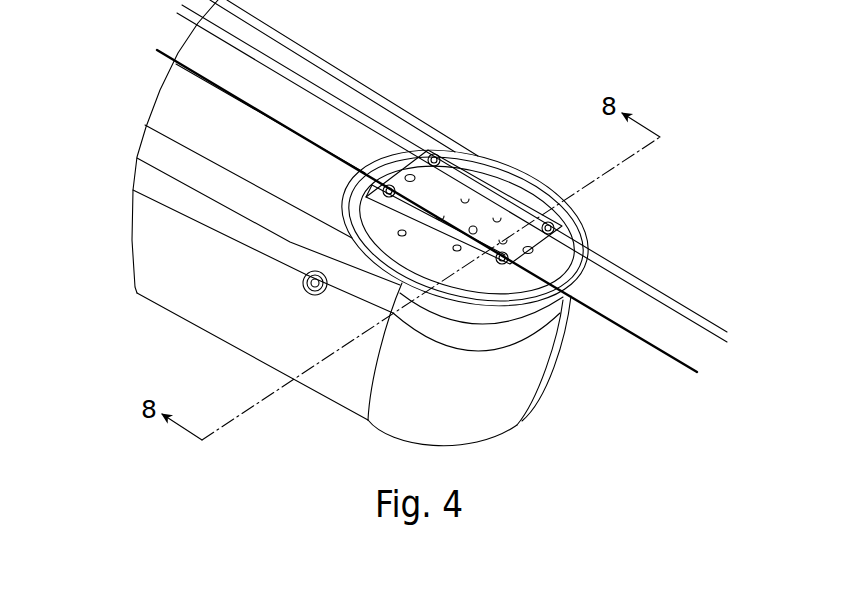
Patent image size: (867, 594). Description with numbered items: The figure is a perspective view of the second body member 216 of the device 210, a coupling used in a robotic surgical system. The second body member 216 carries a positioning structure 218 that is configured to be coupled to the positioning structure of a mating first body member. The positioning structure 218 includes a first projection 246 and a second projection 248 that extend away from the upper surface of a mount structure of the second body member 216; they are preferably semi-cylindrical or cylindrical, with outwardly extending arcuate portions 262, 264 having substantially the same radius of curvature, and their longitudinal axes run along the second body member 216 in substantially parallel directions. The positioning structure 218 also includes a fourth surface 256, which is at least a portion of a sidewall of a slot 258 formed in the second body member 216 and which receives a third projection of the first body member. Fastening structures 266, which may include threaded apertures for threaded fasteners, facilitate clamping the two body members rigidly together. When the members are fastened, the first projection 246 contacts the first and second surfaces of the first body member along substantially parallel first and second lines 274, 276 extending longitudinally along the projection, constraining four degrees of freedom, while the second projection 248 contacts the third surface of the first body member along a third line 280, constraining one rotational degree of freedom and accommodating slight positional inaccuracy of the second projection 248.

The device 210 is at (160, 325).
The second body member 216 is at (579, 227).
The positioning structure 218 is at (663, 179).
The first projection 246 is at (492, 188).
The second projection 248 is at (443, 205).
The fourth surface 256 is at (509, 238).
The slot 258 is at (527, 272).
The arcuate portion 262 is at (490, 264).
The arcuate portion 264 is at (516, 210).
The fastening structures 266 is at (410, 174).
The first line 274 is at (707, 322).
The second line 276 is at (703, 338).
The third line 280 is at (678, 366).